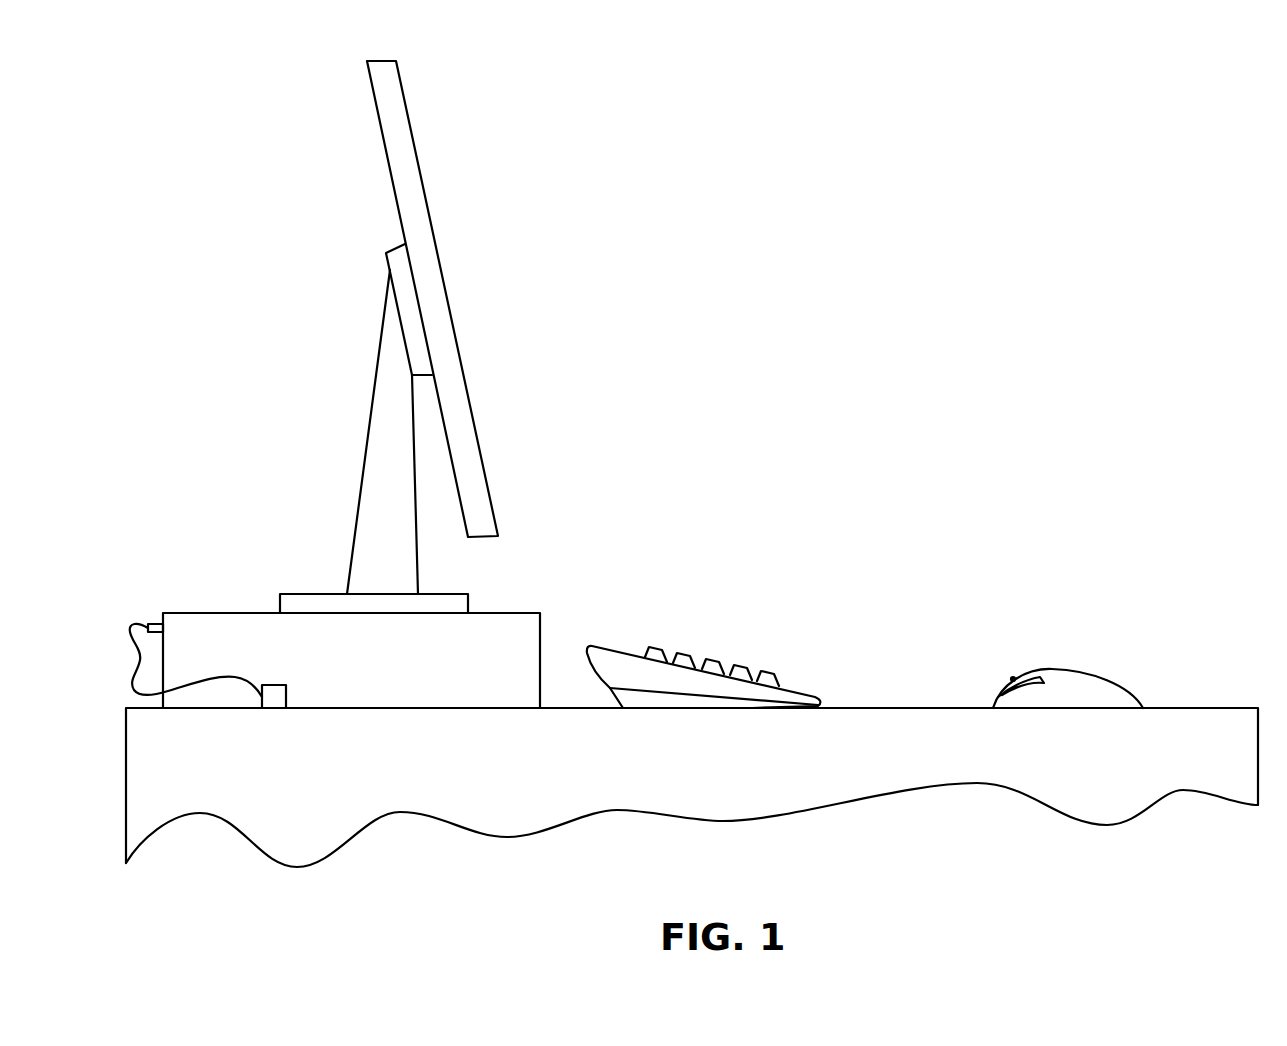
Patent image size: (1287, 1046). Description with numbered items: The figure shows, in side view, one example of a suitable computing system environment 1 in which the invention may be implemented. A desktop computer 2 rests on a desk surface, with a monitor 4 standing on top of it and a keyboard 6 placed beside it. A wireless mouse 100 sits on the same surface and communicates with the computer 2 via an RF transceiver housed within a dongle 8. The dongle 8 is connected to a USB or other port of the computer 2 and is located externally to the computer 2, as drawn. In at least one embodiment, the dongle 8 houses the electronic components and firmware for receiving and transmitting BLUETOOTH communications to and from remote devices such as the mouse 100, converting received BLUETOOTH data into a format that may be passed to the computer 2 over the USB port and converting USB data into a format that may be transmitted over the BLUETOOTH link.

The computing system environment 1 is at (748, 280).
The desktop computer 2 is at (523, 612).
The monitor 4 is at (437, 252).
The keyboard 6 is at (790, 688).
The dongle 8 is at (267, 685).
The wireless mouse 100 is at (1062, 668).